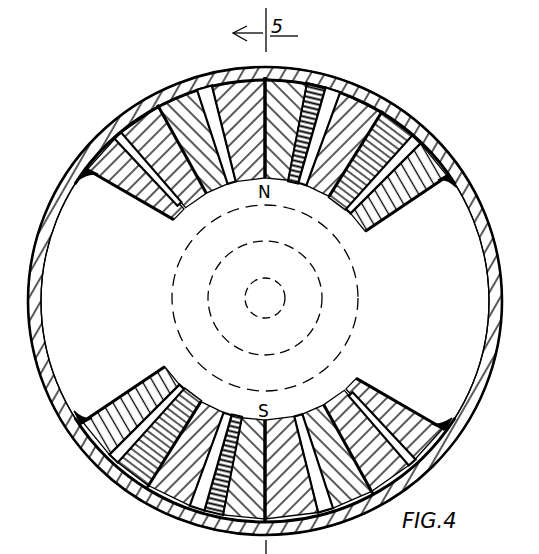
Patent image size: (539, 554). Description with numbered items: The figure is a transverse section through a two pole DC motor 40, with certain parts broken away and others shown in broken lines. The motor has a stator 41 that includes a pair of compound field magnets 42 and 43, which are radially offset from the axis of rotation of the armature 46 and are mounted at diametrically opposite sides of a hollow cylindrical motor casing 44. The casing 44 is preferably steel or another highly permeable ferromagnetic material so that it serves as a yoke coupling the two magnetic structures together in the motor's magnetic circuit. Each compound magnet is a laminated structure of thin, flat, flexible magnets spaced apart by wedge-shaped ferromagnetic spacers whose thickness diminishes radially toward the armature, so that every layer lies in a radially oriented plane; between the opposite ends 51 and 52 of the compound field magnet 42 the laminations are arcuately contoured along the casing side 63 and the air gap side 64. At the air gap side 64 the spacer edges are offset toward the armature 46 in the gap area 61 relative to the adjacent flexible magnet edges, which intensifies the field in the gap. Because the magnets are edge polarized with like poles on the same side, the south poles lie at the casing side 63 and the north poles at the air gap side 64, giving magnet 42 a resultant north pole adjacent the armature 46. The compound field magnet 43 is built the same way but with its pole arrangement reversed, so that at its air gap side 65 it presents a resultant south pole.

The two pole DC motor 40 is at (443, 149).
The stator 41 is at (450, 170).
The compound field magnet 42 is at (372, 220).
The compound field magnet 43 is at (386, 391).
The motor casing 44 is at (490, 365).
The armature 46 is at (360, 317).
The end of compound field magnet 51 is at (135, 193).
The end of compound field magnet 52 is at (404, 197).
The gap area 61 is at (173, 236).
The casing side 63 is at (347, 84).
The air gap side 64 is at (198, 194).
The air gap side 65 is at (225, 416).